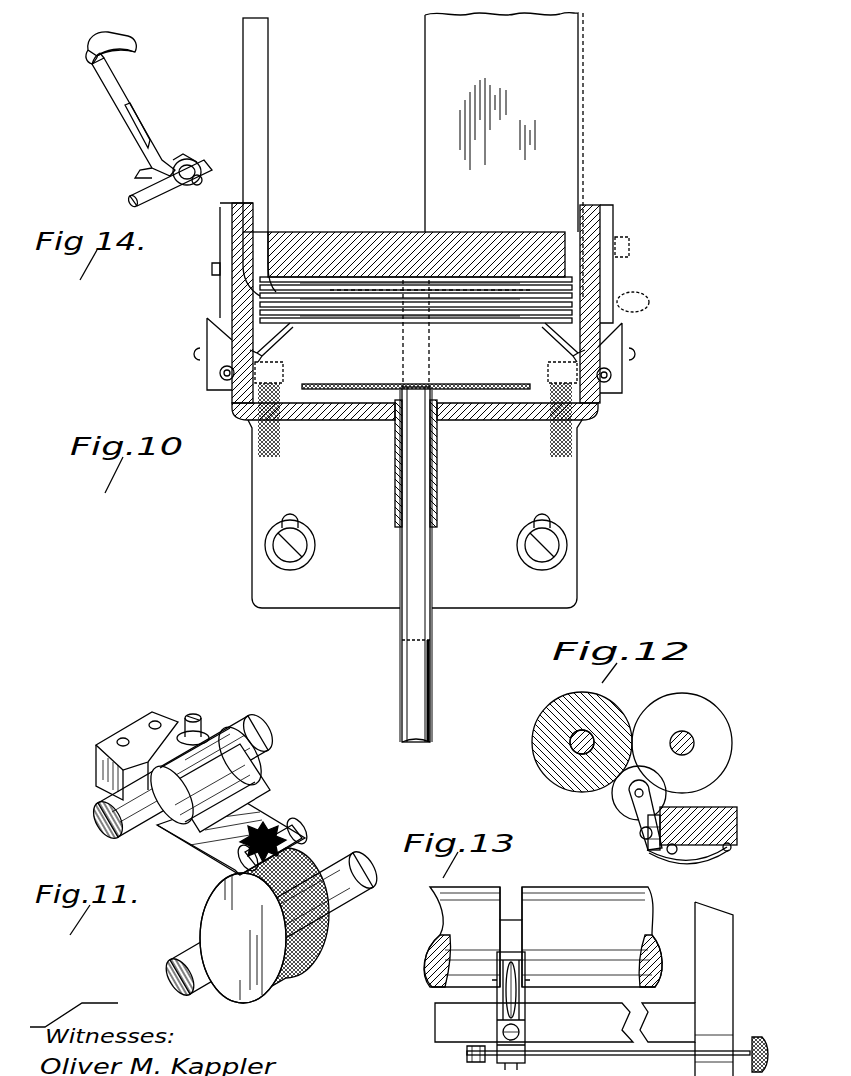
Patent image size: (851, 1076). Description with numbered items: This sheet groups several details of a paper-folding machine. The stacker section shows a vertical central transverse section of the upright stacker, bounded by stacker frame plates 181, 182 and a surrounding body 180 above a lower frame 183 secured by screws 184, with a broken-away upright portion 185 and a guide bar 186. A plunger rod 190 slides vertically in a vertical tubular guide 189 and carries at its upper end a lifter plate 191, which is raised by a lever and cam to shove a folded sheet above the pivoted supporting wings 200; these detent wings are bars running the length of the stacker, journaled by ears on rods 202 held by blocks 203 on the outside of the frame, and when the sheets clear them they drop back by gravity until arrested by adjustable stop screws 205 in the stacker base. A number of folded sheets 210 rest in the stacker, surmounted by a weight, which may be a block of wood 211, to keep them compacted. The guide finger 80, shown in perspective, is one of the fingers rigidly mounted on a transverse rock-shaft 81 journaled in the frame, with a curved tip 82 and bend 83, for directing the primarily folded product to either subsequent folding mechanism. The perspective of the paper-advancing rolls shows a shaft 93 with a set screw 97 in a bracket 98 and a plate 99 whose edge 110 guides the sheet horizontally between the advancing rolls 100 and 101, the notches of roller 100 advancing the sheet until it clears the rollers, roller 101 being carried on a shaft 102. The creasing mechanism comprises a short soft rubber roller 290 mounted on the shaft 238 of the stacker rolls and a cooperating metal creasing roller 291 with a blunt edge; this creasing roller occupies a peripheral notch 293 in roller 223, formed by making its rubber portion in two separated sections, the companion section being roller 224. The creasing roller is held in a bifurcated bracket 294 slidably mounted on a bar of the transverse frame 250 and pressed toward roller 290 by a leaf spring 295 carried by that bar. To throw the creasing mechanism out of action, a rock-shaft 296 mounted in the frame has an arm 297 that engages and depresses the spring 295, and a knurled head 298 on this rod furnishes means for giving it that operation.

In FIG. 14, the guide finger 80 is at (148, 120).
In FIG. 14, the rock-shaft 81 is at (189, 160).
In FIG. 14, the hook end 82 is at (135, 48).
In FIG. 14, the bend 83 is at (88, 62).
In FIG. 10, the base plate 180 is at (472, 416).
In FIG. 10, the stacker frame plate 181 is at (240, 241).
In FIG. 10, the stacker frame plate 182 is at (613, 272).
In FIG. 10, the lower frame 183 is at (415, 514).
In FIG. 10, the screws 184 is at (298, 520).
In FIG. 10, the sheet 185 is at (504, 156).
In FIG. 10, the guide bar 186 is at (268, 80).
In FIG. 10, the vertical tubular guide 189 is at (437, 465).
In FIG. 10, the plunger rod 190 is at (430, 553).
In FIG. 10, the lifter plate 191 is at (460, 385).
In FIG. 10, the supporting wings 200 is at (290, 330).
In FIG. 10, the rods 202 is at (220, 375).
In FIG. 10, the blocks 203 is at (622, 340).
In FIG. 10, the adjustable stop screws 205 is at (283, 372).
In FIG. 10, the sheets 210 is at (378, 312).
In FIG. 10, the block of wood 211 is at (352, 232).
In FIG. 11, the shaft 93 is at (268, 740).
In FIG. 11, the set screw 97 is at (197, 714).
In FIG. 11, the bracket 98 is at (96, 763).
In FIG. 11, the plate 99 is at (240, 807).
In FIG. 11, the advancing roll 100 is at (300, 840).
In FIG. 11, the advancing roll 101 is at (270, 975).
In FIG. 11, the shaft 102 is at (355, 905).
In FIG. 11, the plate edge 110 is at (230, 866).
In FIG. 12, the roller 223 is at (682, 743).
In FIG. 13, the roller 223 is at (592, 937).
In FIG. 12, the roller 224 is at (692, 733).
In FIG. 13, the roller 224 is at (462, 937).
In FIG. 12, the shaft 238 is at (570, 745).
In FIG. 12, the transverse frame 250 is at (737, 820).
In FIG. 13, the transverse frame 250 is at (584, 989).
In FIG. 12, the soft rubber roller 290 is at (560, 702).
In FIG. 12, the creasing roller 291 is at (624, 800).
In FIG. 13, the creasing roller 291 is at (506, 1000).
In FIG. 12, the peripheral notch 293 is at (685, 773).
In FIG. 13, the peripheral notch 293 is at (515, 887).
In FIG. 12, the bifurcated bracket 294 is at (652, 818).
In FIG. 13, the bifurcated bracket 294 is at (525, 1020).
In FIG. 12, the leaf spring 295 is at (700, 860).
In FIG. 13, the rock-shaft 296 is at (608, 1061).
In FIG. 12, the arm 297 is at (668, 856).
In FIG. 13, the knurled head 298 is at (760, 1037).